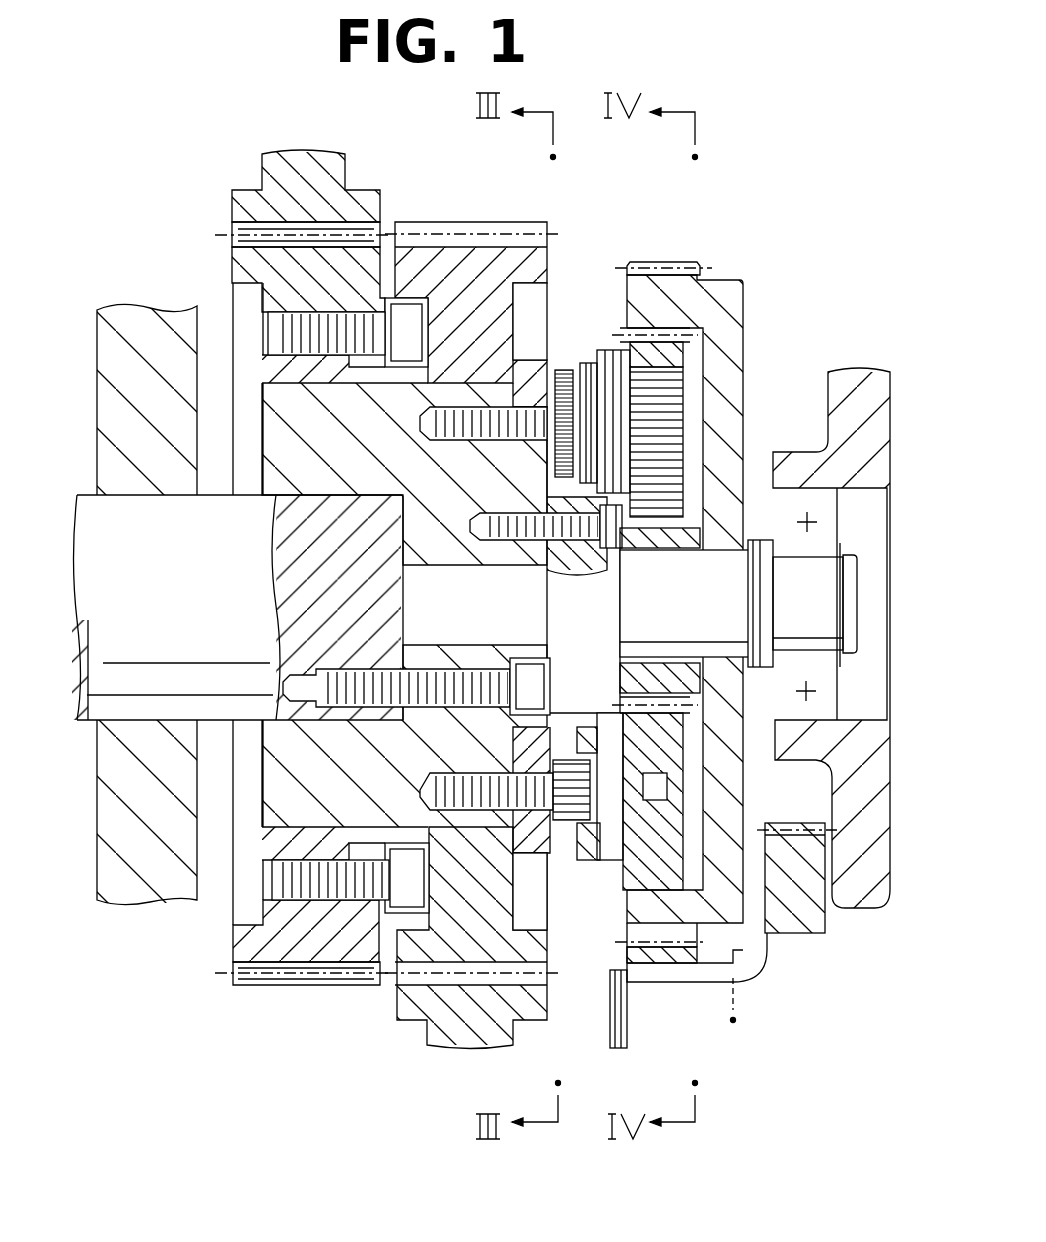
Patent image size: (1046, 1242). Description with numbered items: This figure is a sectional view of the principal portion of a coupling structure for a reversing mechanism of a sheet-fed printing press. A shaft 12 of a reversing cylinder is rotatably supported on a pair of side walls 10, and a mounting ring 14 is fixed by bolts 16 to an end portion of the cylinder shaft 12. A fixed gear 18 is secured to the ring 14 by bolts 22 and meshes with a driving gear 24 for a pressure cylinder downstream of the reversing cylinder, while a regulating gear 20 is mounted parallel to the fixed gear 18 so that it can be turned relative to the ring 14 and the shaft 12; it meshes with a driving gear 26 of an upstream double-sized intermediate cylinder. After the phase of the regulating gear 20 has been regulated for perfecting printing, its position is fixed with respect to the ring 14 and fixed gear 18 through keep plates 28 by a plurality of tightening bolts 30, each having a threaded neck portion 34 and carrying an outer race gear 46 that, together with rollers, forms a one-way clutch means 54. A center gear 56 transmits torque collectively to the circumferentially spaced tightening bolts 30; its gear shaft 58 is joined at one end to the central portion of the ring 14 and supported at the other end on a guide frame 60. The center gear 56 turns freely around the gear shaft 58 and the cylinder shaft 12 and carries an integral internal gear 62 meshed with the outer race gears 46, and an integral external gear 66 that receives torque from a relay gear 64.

The side wall 10 is at (160, 877).
The shaft 12 is at (110, 530).
The mounting ring 14 is at (290, 413).
The bolts 16 is at (345, 727).
The fixed gear 18 is at (243, 263).
The regulating gear 20 is at (413, 1000).
The bolts 22 is at (340, 298).
The driving gear 24 is at (243, 193).
The driving gear 26 is at (477, 1030).
The keep plates 28 is at (485, 430).
The tightening bolts 30 is at (612, 322).
The neck portion 34 is at (540, 357).
The outer race gear 46 is at (663, 393).
The one-way clutch means 54 is at (612, 878).
The center gear 56 is at (728, 308).
The gear shaft 58 is at (713, 565).
The guide frame 60 is at (860, 873).
The internal gear 62 is at (677, 332).
The relay gear 64 is at (740, 960).
The external gear 66 is at (693, 262).